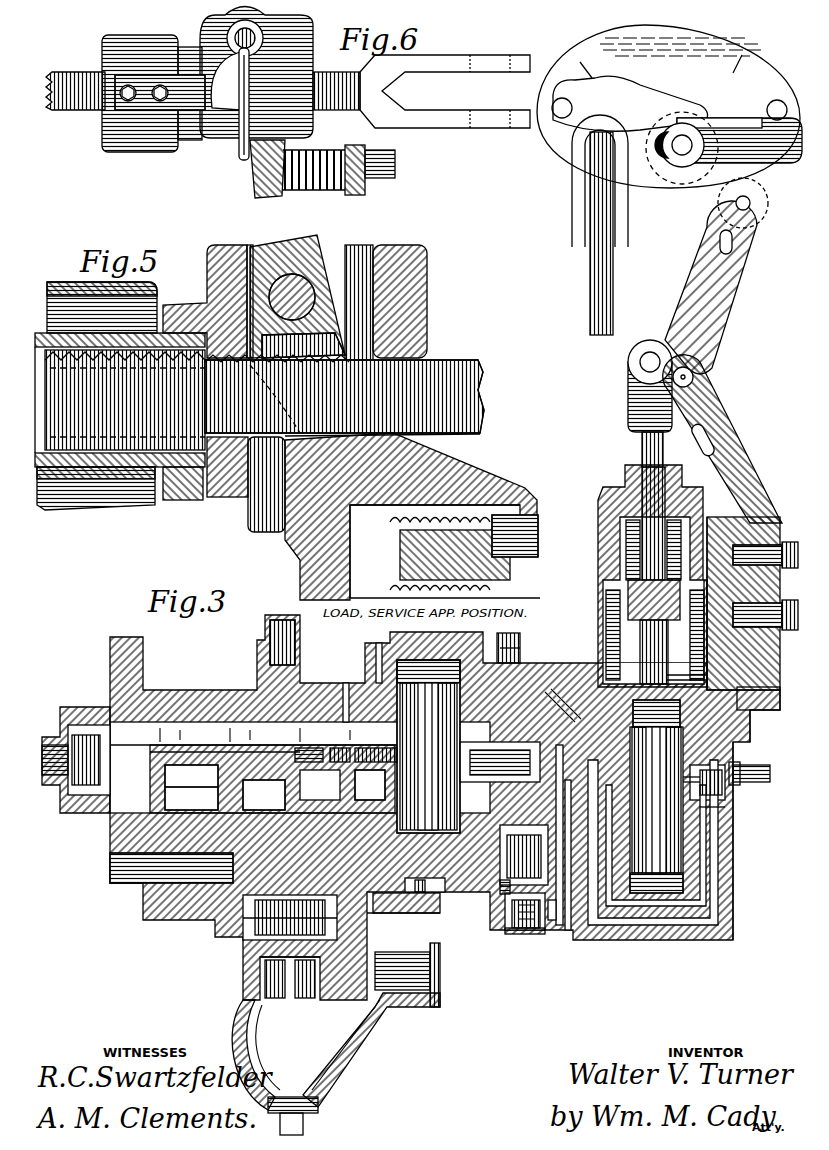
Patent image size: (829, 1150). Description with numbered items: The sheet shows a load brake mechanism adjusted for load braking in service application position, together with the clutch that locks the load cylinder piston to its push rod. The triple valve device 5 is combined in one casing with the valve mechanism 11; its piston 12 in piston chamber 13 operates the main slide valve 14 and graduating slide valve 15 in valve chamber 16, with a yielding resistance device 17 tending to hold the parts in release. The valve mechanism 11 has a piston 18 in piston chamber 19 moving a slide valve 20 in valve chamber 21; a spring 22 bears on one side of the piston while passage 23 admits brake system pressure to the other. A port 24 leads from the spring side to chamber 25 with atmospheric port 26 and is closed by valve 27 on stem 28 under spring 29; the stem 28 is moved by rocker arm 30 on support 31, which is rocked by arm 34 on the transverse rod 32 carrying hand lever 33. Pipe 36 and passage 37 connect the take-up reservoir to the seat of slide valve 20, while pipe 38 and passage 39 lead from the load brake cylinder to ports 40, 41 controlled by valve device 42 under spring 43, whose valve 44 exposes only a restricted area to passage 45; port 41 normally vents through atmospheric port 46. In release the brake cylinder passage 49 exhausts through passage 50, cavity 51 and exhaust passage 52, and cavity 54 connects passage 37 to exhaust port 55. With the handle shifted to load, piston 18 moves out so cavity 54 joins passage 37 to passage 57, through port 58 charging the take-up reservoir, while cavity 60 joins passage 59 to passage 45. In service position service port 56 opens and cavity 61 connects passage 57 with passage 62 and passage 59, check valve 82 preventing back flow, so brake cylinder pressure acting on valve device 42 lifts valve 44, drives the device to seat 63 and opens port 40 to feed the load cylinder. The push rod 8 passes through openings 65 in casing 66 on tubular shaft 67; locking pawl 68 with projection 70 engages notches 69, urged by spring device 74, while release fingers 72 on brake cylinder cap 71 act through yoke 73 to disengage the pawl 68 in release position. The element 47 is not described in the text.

In FIG. 3, the triple valve device 5 is at (128, 660).
In FIG. 6, the push rod 8 is at (61, 104).
In FIG. 5, the push rod 8 is at (468, 381).
In FIG. 3, the valve mechanism 11 is at (740, 672).
In FIG. 3, the piston 12 is at (420, 740).
In FIG. 3, the piston chamber 13 is at (410, 665).
In FIG. 3, the main slide valve 14 is at (447, 761).
In FIG. 3, the graduating slide valve 15 is at (225, 751).
In FIG. 3, the valve chamber 16 is at (140, 740).
In FIG. 3, the yielding resistance device 17 is at (96, 810).
In FIG. 3, the piston 18 is at (780, 700).
In FIG. 3, the piston chamber 19 is at (750, 730).
In FIG. 3, the slide valve 20 is at (680, 740).
In FIG. 3, the valve chamber 21 is at (627, 897).
In FIG. 3, the spring 22 is at (606, 612).
In FIG. 3, the passage 23 is at (503, 643).
In FIG. 3, the port 24 is at (690, 677).
In FIG. 3, the chamber 25 is at (680, 616).
In FIG. 3, the atmospheric port 26 is at (700, 530).
In FIG. 3, the valve 27 is at (625, 566).
In FIG. 3, the stem 28 is at (690, 581).
In FIG. 3, the spring 29 is at (612, 530).
In FIG. 3, the rocker arm 30 is at (724, 296).
In FIG. 3, the support 31 is at (718, 424).
In FIG. 3, the rod 32 is at (680, 136).
In FIG. 3, the hand lever 33 is at (760, 161).
In FIG. 3, the arm 34 is at (738, 178).
In FIG. 3, the pipe 36 is at (770, 773).
In FIG. 3, the passage 37 is at (712, 785).
In FIG. 3, the pipe 38 is at (515, 648).
In FIG. 3, the passage 39 is at (565, 688).
In FIG. 3, the port 40 is at (568, 930).
In FIG. 3, the port 41 is at (552, 930).
In FIG. 3, the valve device 42 is at (508, 915).
In FIG. 3, the spring 43 is at (535, 930).
In FIG. 3, the valve 44 is at (530, 850).
In FIG. 3, the passage 45 is at (540, 815).
In FIG. 3, the atmospheric port 46 is at (520, 934).
In FIG. 3, the pipe connection 47 is at (352, 1014).
In FIG. 3, the brake cylinder passage 49 is at (166, 855).
In FIG. 3, the passage 50 is at (191, 798).
In FIG. 3, the cavity 51 is at (272, 777).
In FIG. 3, the exhaust passage 52 is at (377, 789).
In FIG. 3, the cavity 54 is at (683, 778).
In FIG. 3, the atmospheric exhaust port 55 is at (707, 808).
In FIG. 3, the service port 56 is at (191, 778).
In FIG. 3, the passage 57 is at (725, 872).
In FIG. 3, the through port 58 is at (339, 751).
In FIG. 3, the passage 59 is at (742, 900).
In FIG. 3, the cavity 60 is at (683, 845).
In FIG. 3, the cavity 61 is at (309, 751).
In FIG. 3, the passage 62 is at (582, 768).
In FIG. 3, the seat 63 is at (505, 930).
In FIG. 5, the openings 65 is at (233, 440).
In FIG. 6, the casing 66 is at (305, 72).
In FIG. 5, the casing 66 is at (418, 288).
In FIG. 5, the tubular shaft 67 is at (195, 472).
In FIG. 5, the locking pawl 68 is at (330, 312).
In FIG. 5, the notches 69 is at (190, 362).
In FIG. 5, the projection 70 is at (343, 349).
In FIG. 6, the brake cylinder cap 71 is at (119, 149).
In FIG. 5, the brake cylinder cap 71 is at (144, 293).
In FIG. 6, the release fingers 72 is at (146, 88).
In FIG. 6, the yoke 73 is at (238, 142).
In FIG. 5, the yoke 73 is at (275, 533).
In FIG. 5, the spring device 74 is at (395, 525).
In FIG. 3, the check valve 82 is at (305, 660).